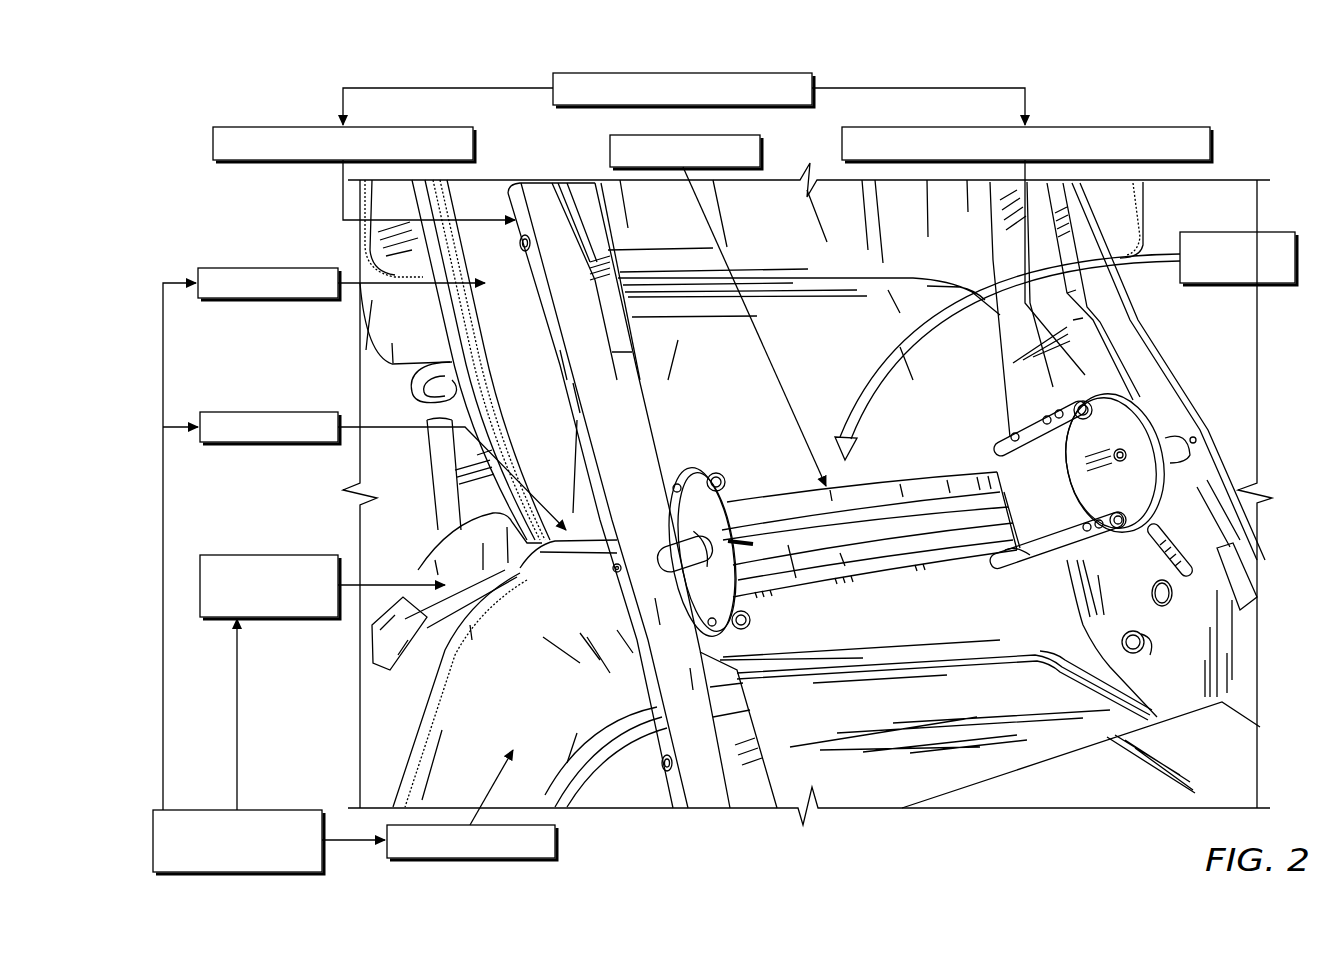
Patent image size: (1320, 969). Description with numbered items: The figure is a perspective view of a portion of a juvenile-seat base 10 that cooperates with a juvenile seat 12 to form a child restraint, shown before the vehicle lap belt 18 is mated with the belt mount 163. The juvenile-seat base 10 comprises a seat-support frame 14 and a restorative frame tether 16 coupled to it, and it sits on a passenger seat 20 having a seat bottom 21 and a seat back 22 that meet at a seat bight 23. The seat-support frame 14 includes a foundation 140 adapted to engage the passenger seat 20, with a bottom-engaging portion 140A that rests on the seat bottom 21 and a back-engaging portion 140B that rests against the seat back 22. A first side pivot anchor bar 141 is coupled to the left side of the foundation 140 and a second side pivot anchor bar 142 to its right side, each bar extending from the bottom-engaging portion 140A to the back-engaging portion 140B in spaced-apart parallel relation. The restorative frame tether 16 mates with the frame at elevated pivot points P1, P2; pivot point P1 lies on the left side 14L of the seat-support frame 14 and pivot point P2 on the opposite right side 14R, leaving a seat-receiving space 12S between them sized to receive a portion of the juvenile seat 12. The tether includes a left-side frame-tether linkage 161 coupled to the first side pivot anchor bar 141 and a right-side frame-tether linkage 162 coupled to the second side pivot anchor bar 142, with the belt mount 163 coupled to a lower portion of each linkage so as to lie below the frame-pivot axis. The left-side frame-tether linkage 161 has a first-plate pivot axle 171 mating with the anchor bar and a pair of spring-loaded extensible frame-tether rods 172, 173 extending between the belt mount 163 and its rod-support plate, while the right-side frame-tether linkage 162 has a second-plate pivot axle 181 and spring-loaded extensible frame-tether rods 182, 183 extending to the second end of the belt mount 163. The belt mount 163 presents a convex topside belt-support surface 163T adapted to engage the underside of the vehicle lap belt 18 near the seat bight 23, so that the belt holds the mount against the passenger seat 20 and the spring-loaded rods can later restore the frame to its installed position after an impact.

The juvenile-seat base 10 is at (602, 72).
The seat-support frame 14 is at (260, 126).
The belt mount 163 is at (657, 134).
The restorative frame tether 16 is at (1160, 126).
The seat back 22 is at (245, 267).
The seat bight 23 is at (247, 411).
The vehicle lap belt 18 is at (243, 554).
The passenger seat 20 is at (273, 809).
The seat bottom 21 is at (555, 836).
The juvenile seat 12 is at (1230, 231).
The left side of seat-support frame 14L is at (678, 554).
The right side of seat-support frame 14R is at (1192, 455).
The first side pivot anchor bar 141 is at (705, 788).
The second side pivot anchor bar 142 is at (1228, 542).
The foundation 140 is at (1062, 792).
The bottom-engaging portion 140A is at (1173, 795).
The back-engaging portion 140B is at (1013, 245).
The seat-receiving space 12S is at (1020, 633).
The left-side frame-tether linkage 161 is at (688, 461).
The right-side frame-tether linkage 162 is at (1113, 414).
The topside belt-support surface 163T is at (875, 481).
The first-plate pivot axle 171 is at (723, 535).
The left-side spring-loaded extensible frame-tether rod 172 is at (745, 630).
The left-side spring-loaded extensible frame-tether rod 173 is at (708, 466).
The second-plate pivot axle 181 is at (1163, 445).
The spring-loaded extensible frame-tether rod 182 is at (1047, 562).
The spring-loaded extensible frame-tether rod 183 is at (998, 442).
The elevated pivot point P1 is at (614, 570).
The elevated pivot point P2 is at (1196, 438).